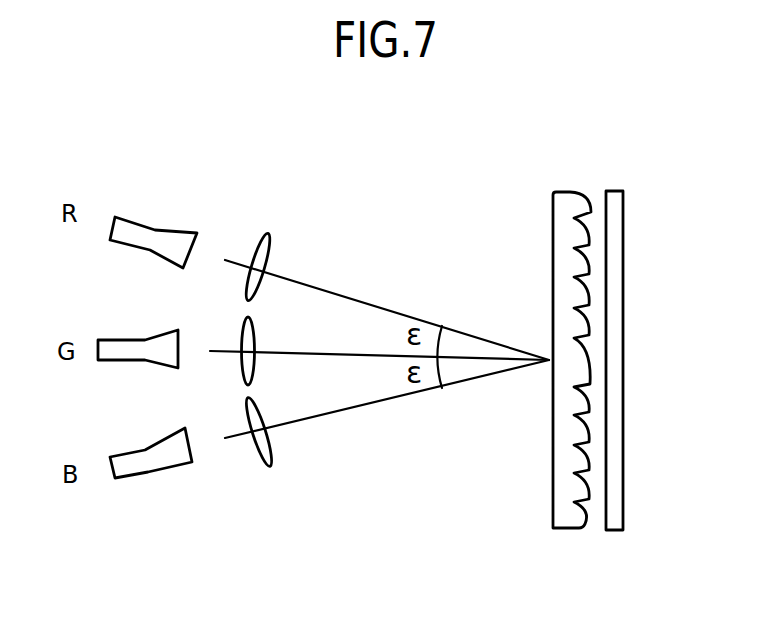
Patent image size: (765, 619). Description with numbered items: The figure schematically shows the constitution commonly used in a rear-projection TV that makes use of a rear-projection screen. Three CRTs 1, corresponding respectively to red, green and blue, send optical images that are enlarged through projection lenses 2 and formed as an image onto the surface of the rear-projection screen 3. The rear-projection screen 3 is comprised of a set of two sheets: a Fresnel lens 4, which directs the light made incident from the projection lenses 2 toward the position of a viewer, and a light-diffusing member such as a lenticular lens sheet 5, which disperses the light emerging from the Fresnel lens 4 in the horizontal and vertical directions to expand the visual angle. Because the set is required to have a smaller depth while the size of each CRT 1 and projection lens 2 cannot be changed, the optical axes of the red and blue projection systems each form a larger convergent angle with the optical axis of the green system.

The CRT 1 is at (132, 226).
The projection lens 2 is at (270, 250).
The rear-projection screen 3 is at (623, 146).
The Fresnel lens 4 is at (560, 192).
The lenticular lens sheet 5 is at (610, 193).